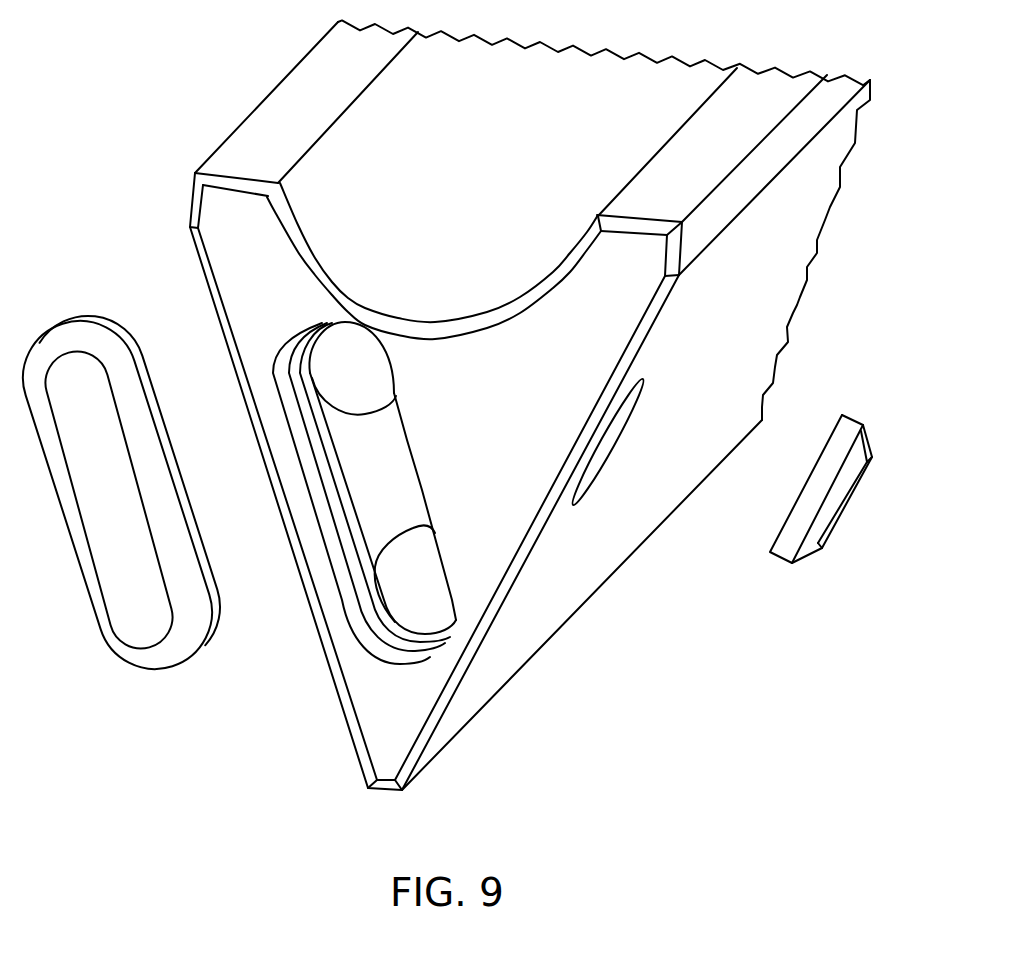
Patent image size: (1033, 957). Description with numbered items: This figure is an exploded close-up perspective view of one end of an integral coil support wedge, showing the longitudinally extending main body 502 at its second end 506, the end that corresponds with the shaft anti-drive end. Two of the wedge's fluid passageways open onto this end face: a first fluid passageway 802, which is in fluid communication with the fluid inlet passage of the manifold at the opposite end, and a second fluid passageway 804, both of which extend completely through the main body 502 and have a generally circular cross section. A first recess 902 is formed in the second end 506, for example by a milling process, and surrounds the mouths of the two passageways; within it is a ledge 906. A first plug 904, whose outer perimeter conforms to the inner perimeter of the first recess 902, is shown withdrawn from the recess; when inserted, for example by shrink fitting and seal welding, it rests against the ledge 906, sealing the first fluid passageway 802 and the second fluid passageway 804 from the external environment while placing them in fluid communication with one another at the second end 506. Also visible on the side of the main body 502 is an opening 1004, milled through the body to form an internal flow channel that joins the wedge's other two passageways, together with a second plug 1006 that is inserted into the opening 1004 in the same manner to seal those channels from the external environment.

The main body 502 is at (583, 590).
The second end 506 is at (215, 210).
The first fluid passageway 802 is at (373, 389).
The second fluid passageway 804 is at (427, 558).
The first recess 902 is at (353, 475).
The first plug 904 is at (130, 658).
The ledge 906 is at (362, 609).
The opening 1004 is at (612, 457).
The second plug 1006 is at (803, 560).